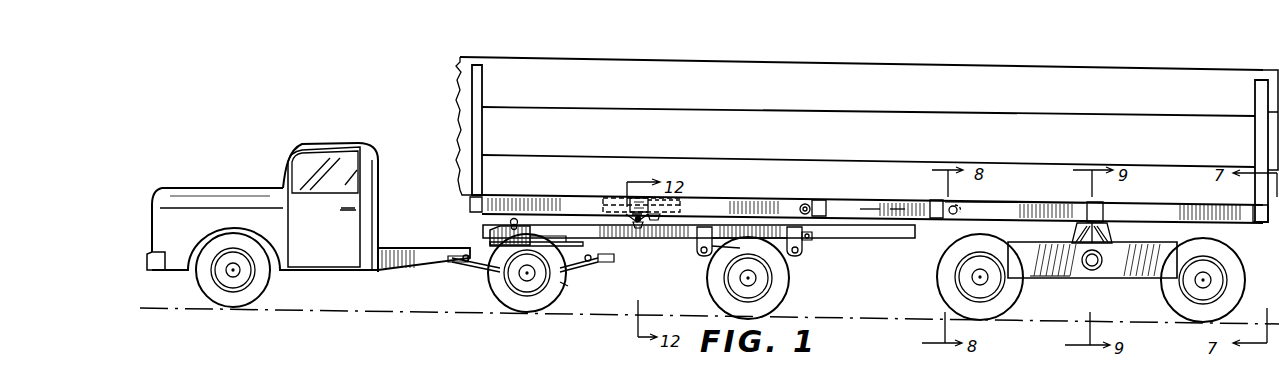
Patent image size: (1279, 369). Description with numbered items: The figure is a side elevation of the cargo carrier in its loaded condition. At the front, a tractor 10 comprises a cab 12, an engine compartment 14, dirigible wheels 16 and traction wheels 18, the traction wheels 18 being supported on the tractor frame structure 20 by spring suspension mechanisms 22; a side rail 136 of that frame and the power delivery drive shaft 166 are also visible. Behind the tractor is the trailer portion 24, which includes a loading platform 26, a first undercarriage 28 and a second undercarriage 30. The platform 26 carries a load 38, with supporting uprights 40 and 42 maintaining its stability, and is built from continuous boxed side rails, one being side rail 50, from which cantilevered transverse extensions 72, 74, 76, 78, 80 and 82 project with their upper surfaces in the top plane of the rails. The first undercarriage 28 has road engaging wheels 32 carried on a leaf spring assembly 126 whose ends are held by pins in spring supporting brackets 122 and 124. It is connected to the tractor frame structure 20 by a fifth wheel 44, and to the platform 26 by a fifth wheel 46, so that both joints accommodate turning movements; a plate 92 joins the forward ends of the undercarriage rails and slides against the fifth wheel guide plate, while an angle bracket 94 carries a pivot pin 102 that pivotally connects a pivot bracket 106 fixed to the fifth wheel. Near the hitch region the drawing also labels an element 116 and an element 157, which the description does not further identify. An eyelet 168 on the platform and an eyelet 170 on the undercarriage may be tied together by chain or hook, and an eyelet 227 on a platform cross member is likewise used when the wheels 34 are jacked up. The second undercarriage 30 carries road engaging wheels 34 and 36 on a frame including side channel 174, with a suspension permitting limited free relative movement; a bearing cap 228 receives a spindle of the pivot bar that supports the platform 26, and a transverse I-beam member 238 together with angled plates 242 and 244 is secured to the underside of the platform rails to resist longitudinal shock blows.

The tractor 10 is at (295, 142).
The cab 12 is at (378, 200).
The engine compartment 14 is at (196, 188).
The dirigible wheels 16 is at (222, 302).
The traction wheels 18 is at (520, 305).
The tractor frame structure 20 is at (405, 262).
The spring suspension mechanisms 22 is at (560, 286).
The trailer portion 24 is at (903, 218).
The loading platform 26 is at (868, 212).
The first undercarriage 28 is at (620, 254).
The second undercarriage 30 is at (1130, 287).
The road engaging wheels 32 is at (782, 294).
The road engaging wheels 34 is at (960, 298).
The road engaging wheels 36 is at (1240, 262).
The load 38 is at (950, 59).
The supporting upright 40 is at (1256, 90).
The supporting upright 42 is at (470, 76).
The fifth wheel 44 is at (482, 241).
The fifth wheel 46 is at (602, 205).
The side rail 50 is at (1000, 202).
The transverse extension 72 is at (470, 201).
The transverse extension 74 is at (680, 208).
The transverse extension 76 is at (814, 200).
The transverse extension 78 is at (937, 196).
The transverse extension 80 is at (1086, 206).
The transverse extension 82 is at (1256, 214).
The plate 92 is at (566, 236).
The angle bracket 94 is at (660, 217).
The pivot pin 102 is at (641, 222).
The pivot bracket 106 is at (632, 217).
The coupling 116 is at (634, 200).
The spring supporting brackets 122 is at (698, 240).
The spring supporting brackets 124 is at (802, 252).
The leaf spring assembly 126 is at (712, 256).
The side rail 136 is at (402, 247).
The pin 157 is at (510, 220).
The power delivery drive shaft 166 is at (468, 268).
The eyelet 168 is at (800, 208).
The eyelet 170 is at (810, 238).
The side channel 174 is at (1048, 278).
The eyelet 227 is at (958, 208).
The bearing cap 228 is at (1090, 270).
The I-beam member 238 is at (1105, 224).
The plate 242 is at (1078, 232).
The plate 244 is at (1108, 232).